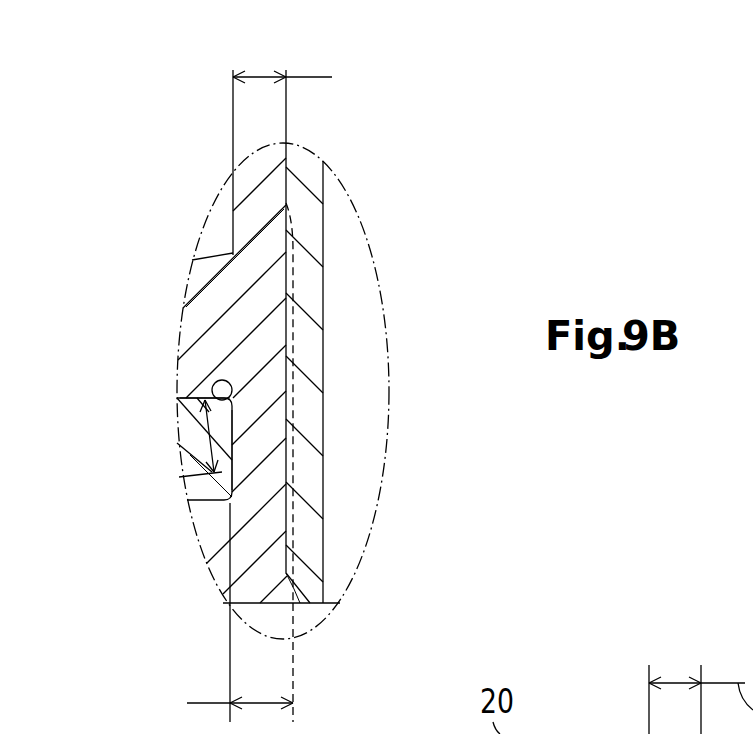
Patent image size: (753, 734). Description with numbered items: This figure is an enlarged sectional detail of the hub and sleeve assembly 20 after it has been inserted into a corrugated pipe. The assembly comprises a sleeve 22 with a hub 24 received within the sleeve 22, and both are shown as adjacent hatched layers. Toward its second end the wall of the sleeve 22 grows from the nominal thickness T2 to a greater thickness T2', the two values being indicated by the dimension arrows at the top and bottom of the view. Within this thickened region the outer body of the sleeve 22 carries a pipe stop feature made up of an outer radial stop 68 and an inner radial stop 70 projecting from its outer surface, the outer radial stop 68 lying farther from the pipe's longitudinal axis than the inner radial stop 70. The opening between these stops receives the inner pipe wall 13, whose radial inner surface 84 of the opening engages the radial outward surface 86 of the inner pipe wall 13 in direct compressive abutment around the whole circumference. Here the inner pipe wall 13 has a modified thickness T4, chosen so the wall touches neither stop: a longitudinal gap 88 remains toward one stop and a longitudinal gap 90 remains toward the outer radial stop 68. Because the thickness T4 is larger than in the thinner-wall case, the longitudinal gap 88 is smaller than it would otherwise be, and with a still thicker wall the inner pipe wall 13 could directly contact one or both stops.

The hub and sleeve assembly 20 is at (162, 168).
The sleeve 22 is at (250, 226).
The hub 24 is at (338, 218).
The nominal thickness T2 is at (343, 91).
The thickness T2' is at (176, 668).
The outer radial stop 68 is at (190, 318).
The inner radial stop 70 is at (200, 552).
The radial inner surface 84 is at (218, 398).
The radial outward surface 86 is at (235, 432).
The longitudinal gap 88 is at (185, 483).
The longitudinal gap 90 is at (212, 386).
The inner pipe wall 13 is at (187, 422).
The thickness T4 is at (185, 443).